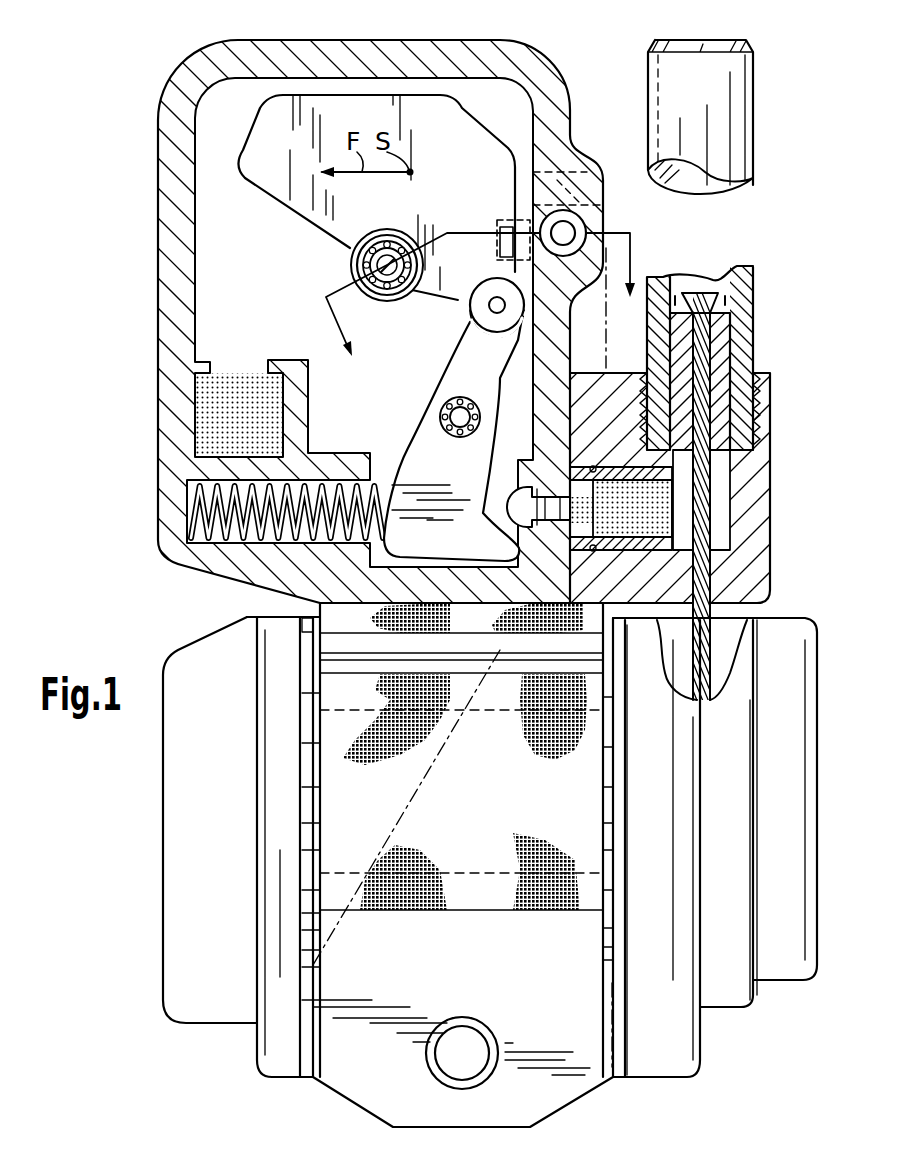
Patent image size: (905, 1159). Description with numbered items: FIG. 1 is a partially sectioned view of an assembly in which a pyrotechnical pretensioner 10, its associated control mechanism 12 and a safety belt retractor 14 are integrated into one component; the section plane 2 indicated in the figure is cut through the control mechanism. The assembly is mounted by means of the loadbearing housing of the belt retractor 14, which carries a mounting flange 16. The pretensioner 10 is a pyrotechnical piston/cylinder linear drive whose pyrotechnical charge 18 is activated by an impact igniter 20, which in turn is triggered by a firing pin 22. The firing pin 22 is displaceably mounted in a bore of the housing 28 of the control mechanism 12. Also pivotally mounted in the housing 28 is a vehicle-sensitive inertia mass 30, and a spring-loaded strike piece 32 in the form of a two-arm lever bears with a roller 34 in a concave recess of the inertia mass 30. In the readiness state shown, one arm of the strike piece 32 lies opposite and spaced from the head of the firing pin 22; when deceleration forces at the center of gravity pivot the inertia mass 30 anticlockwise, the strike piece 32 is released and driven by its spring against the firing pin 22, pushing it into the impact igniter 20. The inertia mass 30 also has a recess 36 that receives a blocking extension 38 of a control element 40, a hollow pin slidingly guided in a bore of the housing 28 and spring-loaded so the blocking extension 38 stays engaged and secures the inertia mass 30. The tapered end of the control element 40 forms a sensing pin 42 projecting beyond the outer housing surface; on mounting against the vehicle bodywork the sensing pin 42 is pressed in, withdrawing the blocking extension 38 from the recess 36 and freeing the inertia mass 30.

The pyrotechnical pretensioner 10 is at (782, 366).
The control mechanism 12 is at (147, 414).
The safety belt retractor 14 is at (763, 1017).
The mounting flange 16 is at (367, 1080).
The pyrotechnical charge 18 is at (657, 510).
The impact igniter 20 is at (582, 525).
The firing pin 22 is at (521, 522).
The housing 28 is at (385, 53).
The vehicle-sensitive inertia mass 30 is at (427, 110).
The spring-loaded strike piece 32 is at (453, 387).
The roller 34 is at (456, 295).
The recess 36 is at (511, 217).
The blocking extension 38 is at (591, 308).
The control element 40 is at (549, 219).
The sensing pin 42 is at (566, 233).
The section line 2- 2 is at (481, 305).